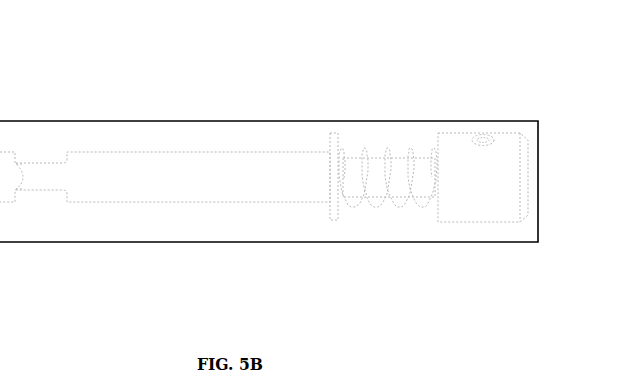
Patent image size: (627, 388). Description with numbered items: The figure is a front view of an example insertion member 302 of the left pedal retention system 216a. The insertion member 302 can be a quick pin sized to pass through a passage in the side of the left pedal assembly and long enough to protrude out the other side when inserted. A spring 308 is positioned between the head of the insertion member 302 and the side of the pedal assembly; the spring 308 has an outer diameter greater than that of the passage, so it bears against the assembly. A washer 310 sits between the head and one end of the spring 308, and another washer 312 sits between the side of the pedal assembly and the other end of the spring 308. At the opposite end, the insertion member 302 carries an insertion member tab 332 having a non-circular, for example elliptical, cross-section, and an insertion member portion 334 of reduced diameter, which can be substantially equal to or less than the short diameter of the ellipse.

The insertion member 302 is at (514, 128).
The spring 308 is at (383, 139).
The washer 310 is at (443, 128).
The washer 312 is at (333, 223).
The left pedal retention system 216a is at (211, 186).
The insertion member tab 332 is at (3, 148).
The insertion member portion 334 is at (42, 190).